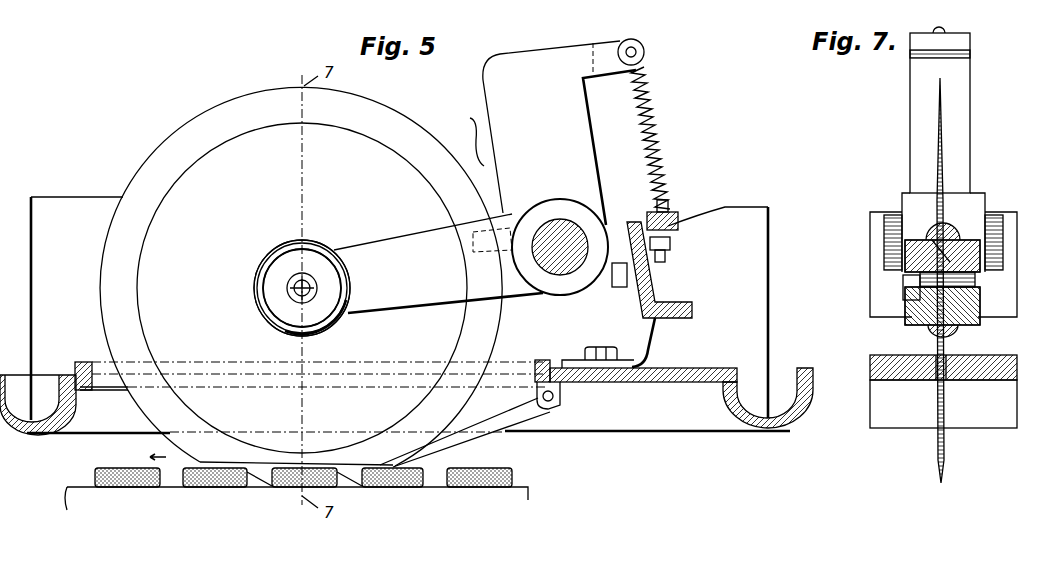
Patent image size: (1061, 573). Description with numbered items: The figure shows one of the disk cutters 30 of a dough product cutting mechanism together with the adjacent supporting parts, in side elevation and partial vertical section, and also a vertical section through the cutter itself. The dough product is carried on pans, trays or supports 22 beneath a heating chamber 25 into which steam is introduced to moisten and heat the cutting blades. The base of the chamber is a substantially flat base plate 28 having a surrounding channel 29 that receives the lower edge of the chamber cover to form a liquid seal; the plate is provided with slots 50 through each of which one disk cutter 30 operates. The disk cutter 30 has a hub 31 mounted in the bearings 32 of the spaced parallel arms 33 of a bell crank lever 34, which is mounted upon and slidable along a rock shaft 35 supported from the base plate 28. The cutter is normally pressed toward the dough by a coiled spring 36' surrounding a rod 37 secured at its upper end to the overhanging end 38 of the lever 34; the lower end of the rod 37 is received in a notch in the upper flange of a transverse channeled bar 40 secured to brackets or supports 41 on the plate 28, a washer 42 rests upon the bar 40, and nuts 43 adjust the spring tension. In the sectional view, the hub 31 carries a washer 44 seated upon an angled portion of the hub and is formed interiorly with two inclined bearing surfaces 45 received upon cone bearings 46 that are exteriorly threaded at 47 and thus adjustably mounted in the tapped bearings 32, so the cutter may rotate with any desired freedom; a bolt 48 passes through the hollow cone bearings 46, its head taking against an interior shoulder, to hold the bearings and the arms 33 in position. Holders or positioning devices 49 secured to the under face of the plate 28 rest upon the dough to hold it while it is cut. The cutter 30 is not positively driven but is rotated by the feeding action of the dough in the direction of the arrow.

In FIG. 5, the pans, trays or supports 22 is at (528, 496).
In FIG. 5, the chamber 25 is at (757, 292).
In FIG. 7, the chamber 25 is at (943, 264).
In FIG. 5, the base plate 28 is at (690, 372).
In FIG. 7, the base plate 28 is at (885, 357).
In FIG. 5, the channel 29 is at (775, 420).
In FIG. 5, the disk cutter 30 is at (300, 92).
In FIG. 7, the disk cutter 30 is at (945, 135).
In FIG. 7, the hub 31 is at (930, 240).
In FIG. 5, the bearings 32 is at (306, 252).
In FIG. 7, the bearings 32 is at (970, 325).
In FIG. 5, the arms 33 is at (380, 241).
In FIG. 5, the bell crank lever 34 is at (533, 127).
In FIG. 7, the bell crank lever 34 is at (918, 137).
In FIG. 5, the rock shaft 35 is at (577, 233).
In FIG. 7, the rock shaft 35 is at (893, 215).
In FIG. 5, the coiled spring 36' is at (660, 138).
In FIG. 5, the rod 37 is at (640, 75).
In FIG. 5, the overhanging end 38 is at (625, 40).
In FIG. 7, the overhanging end 38 is at (921, 35).
In FIG. 5, the transverse channeled bar 40 is at (655, 292).
In FIG. 5, the brackets or supports 41 is at (642, 333).
In FIG. 5, the washer 42 is at (672, 218).
In FIG. 5, the nuts 43 is at (670, 243).
In FIG. 5, the washer 44 is at (270, 258).
In FIG. 7, the washer 44 is at (960, 240).
In FIG. 7, the inclined bearing surfaces 45 is at (868, 294).
In FIG. 5, the cone bearings 46 is at (290, 288).
In FIG. 7, the cone bearings 46 is at (868, 320).
In FIG. 7, the threads 47 is at (1020, 310).
In FIG. 5, the bolt 48 is at (297, 304).
In FIG. 7, the bolt 48 is at (975, 283).
In FIG. 5, the holders or positioning devices 49 is at (455, 440).
In FIG. 5, the slots 50 is at (513, 367).
In FIG. 7, the slots 50 is at (950, 357).